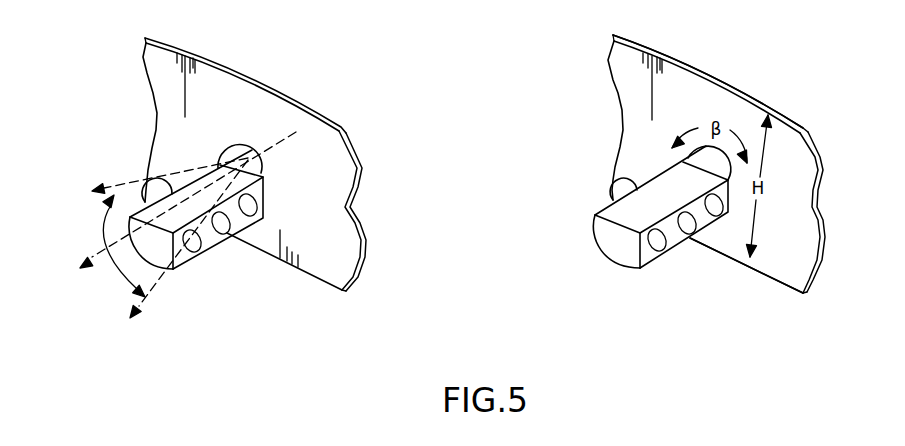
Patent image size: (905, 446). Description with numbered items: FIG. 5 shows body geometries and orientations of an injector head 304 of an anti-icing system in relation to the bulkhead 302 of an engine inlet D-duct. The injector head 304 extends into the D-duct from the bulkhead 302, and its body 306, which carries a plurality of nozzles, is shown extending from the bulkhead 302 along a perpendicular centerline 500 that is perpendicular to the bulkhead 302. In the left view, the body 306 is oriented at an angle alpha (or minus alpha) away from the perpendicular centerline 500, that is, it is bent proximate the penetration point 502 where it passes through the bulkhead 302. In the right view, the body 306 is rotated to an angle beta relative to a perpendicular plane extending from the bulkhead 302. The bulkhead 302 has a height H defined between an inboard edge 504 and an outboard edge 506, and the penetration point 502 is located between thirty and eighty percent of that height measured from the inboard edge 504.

The bulkhead 302 is at (313, 143).
The injector head 304 is at (203, 154).
The body 306 is at (160, 182).
The perpendicular centerline 500 is at (113, 246).
The penetration point 502 is at (263, 167).
The inboard edge 504 is at (778, 283).
The outboard edge 506 is at (694, 63).